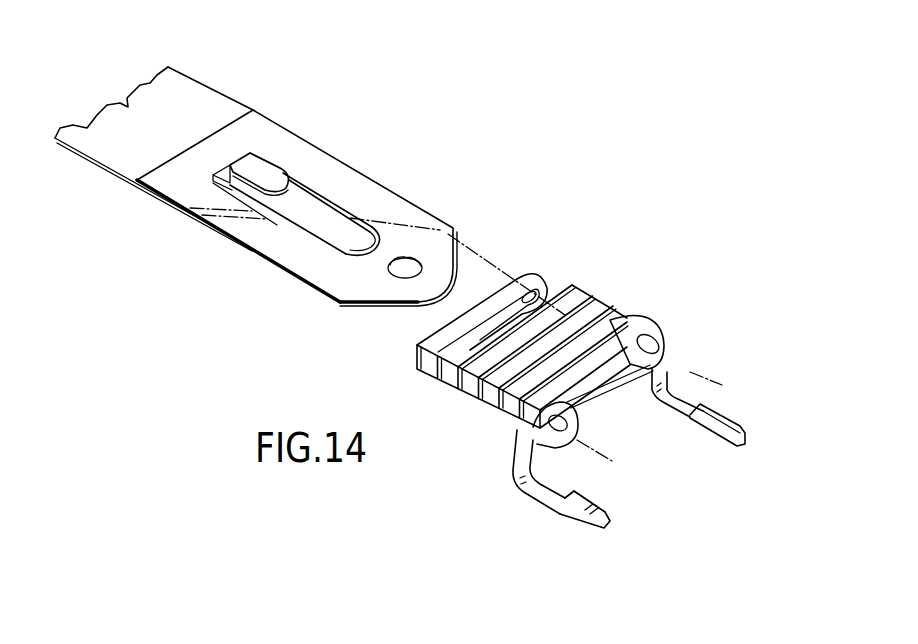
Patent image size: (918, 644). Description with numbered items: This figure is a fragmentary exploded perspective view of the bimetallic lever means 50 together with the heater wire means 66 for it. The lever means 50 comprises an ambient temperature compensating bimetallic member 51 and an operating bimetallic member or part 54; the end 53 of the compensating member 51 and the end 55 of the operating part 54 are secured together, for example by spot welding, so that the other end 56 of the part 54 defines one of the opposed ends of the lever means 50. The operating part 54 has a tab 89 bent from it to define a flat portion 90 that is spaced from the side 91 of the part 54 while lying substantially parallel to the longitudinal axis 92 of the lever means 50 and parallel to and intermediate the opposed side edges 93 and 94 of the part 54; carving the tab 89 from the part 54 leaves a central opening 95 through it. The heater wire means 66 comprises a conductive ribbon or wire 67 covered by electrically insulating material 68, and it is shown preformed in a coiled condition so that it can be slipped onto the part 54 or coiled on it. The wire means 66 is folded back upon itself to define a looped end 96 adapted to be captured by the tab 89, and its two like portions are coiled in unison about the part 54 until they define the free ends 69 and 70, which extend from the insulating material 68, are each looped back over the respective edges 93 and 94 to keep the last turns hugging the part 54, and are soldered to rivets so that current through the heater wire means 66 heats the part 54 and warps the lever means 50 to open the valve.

The bimetallic lever means 50 is at (238, 103).
The ambient temperature compensating bimetallic member 51 is at (128, 103).
The end of ambient temperature compensating bimetallic member 53 is at (130, 172).
The operating bimetallic member or part 54 is at (366, 175).
The end of operating bimetallic part 55 is at (253, 127).
The end of operating bimetallic part 56 is at (455, 253).
The heater wire means 66 is at (603, 303).
The conductive ribbon or wire 67 is at (562, 513).
The electrically insulating material 68 is at (513, 448).
The end of wire means 69 is at (587, 524).
The end of wire means 70 is at (733, 428).
The tab 89 is at (272, 160).
The flat portion of tab 90 is at (322, 165).
The side of operating part 91 is at (250, 218).
The longitudinal axis of bimetallic lever means 92 is at (390, 245).
The side edge of operating part 93 is at (277, 268).
The side edge of operating part 94 is at (400, 185).
The central opening 95 is at (288, 228).
The looped end of heater wire means 96 is at (533, 290).